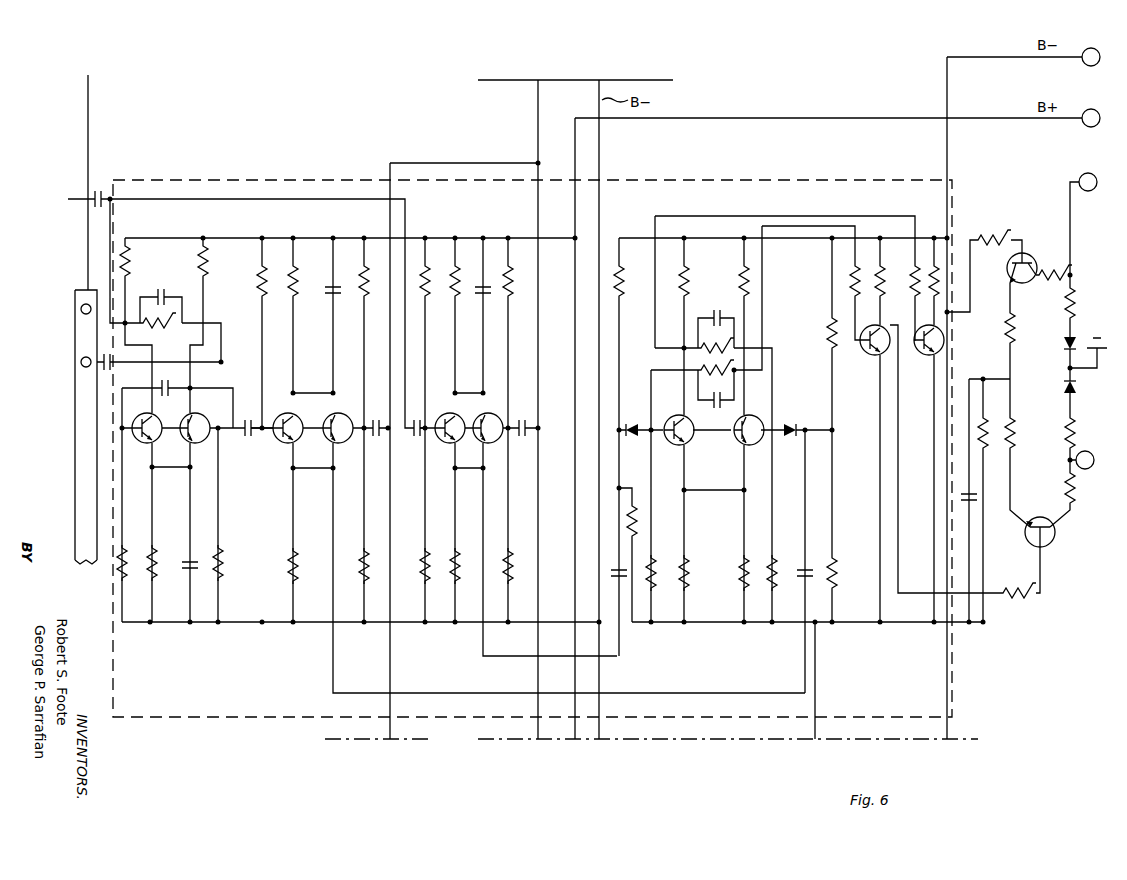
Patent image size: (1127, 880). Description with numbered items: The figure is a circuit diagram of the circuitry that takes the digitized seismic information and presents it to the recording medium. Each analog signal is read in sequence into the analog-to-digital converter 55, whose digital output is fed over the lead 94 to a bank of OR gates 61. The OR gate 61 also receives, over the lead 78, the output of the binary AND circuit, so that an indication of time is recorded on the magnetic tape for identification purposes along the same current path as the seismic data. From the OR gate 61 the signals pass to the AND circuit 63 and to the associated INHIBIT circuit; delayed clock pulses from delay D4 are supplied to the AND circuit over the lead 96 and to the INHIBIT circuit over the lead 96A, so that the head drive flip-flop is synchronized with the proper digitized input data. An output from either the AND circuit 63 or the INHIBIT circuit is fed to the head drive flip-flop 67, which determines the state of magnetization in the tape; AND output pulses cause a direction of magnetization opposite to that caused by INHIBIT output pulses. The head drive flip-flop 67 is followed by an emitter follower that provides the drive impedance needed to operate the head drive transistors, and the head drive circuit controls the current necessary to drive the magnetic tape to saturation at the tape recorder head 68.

The Binary AND to OR circuit lead 78 is at (180, 199).
The Delay D4 to AND lead 96 is at (538, 121).
The Delay D4 to INHIBIT lead 96A is at (433, 163).
The analog-to-digital converter 55 is at (80, 412).
The ADC to OR lead 94 is at (126, 363).
The OR gate 61 is at (195, 517).
The AND circuit 63 is at (528, 465).
The head drive flip-flop 67 is at (797, 477).
The tape recorder head 68 is at (983, 411).